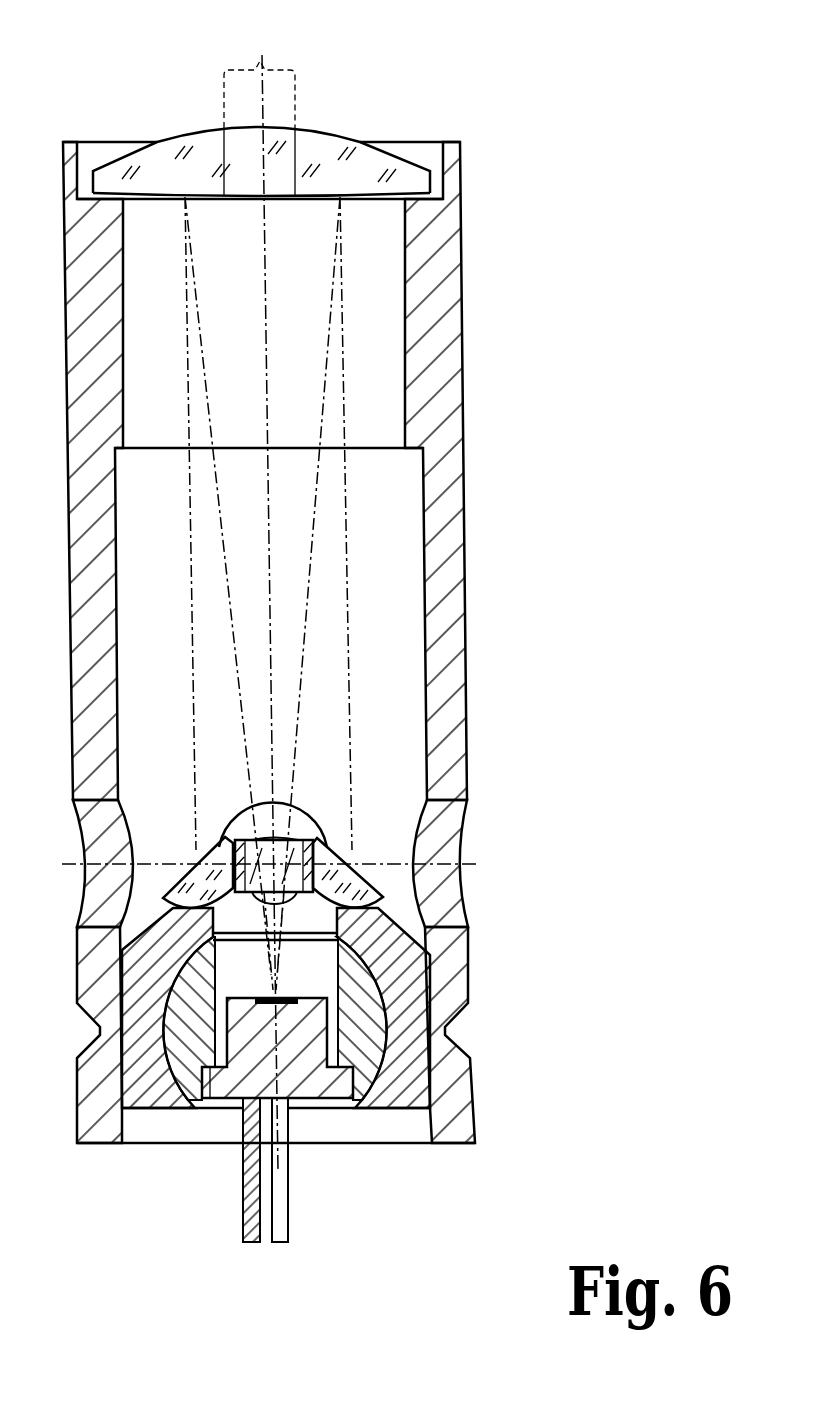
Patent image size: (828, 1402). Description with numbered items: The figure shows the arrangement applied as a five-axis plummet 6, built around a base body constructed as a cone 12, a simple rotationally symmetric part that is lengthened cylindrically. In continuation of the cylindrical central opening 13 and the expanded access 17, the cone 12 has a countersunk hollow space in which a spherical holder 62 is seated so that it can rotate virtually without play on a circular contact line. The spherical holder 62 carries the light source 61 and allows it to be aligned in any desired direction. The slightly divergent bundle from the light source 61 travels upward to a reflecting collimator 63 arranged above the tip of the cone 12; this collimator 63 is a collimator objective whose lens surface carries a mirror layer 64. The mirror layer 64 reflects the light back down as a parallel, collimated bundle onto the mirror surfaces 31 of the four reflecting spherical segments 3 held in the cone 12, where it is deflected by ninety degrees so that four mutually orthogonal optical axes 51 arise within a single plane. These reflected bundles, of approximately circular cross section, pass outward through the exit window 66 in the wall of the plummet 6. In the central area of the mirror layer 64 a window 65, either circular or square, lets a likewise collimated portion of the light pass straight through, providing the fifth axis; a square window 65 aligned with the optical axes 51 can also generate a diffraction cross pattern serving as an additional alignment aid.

The reflecting spherical segment 3 is at (382, 886).
The 5-axis plummet 6 is at (462, 280).
The cone 12 is at (310, 917).
The cylindrical central opening 13 is at (333, 833).
The expanded access 17 is at (388, 940).
The mirror surface 31 is at (382, 888).
The optical axis 51 is at (413, 845).
The light source 61 is at (265, 1013).
The spherical holder 62 is at (363, 1037).
The reflecting collimator 63 is at (210, 142).
The mirror layer 64 is at (317, 185).
The window 65 is at (259, 103).
The exit window 66 is at (440, 815).